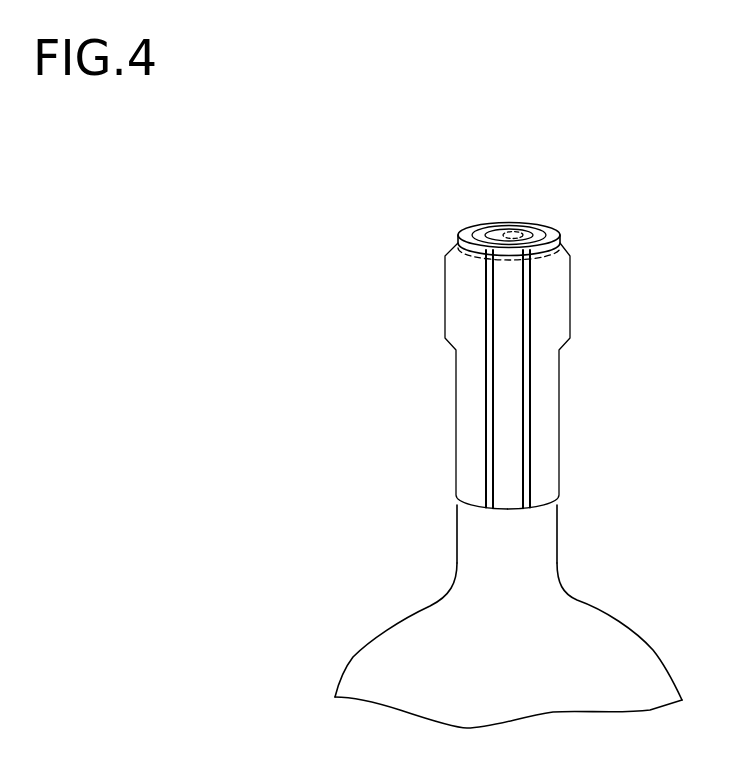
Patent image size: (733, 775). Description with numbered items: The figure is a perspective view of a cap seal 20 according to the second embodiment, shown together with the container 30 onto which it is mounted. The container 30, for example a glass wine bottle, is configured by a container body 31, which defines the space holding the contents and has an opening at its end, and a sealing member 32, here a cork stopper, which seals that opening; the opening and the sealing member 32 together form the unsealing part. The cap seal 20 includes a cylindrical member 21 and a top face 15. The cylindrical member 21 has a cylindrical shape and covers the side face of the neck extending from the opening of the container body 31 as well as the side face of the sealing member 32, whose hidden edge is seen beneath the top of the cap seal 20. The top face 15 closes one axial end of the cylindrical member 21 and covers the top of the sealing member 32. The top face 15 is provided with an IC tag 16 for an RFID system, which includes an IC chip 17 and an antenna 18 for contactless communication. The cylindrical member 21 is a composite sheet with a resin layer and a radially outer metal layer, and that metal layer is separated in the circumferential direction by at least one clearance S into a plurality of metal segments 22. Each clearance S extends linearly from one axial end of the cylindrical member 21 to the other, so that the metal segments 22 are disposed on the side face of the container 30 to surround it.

The cap seal 20 is at (427, 178).
The top face 15 is at (462, 222).
The IC tag 16 is at (608, 164).
The IC chip 17 is at (528, 226).
The antenna 18 is at (507, 223).
The sealing member 32 is at (562, 242).
The cylindrical member 21 is at (456, 403).
The metal segments 22 is at (557, 396).
The clearance S is at (489, 457).
The container 30 is at (380, 607).
The container body 31 is at (640, 627).